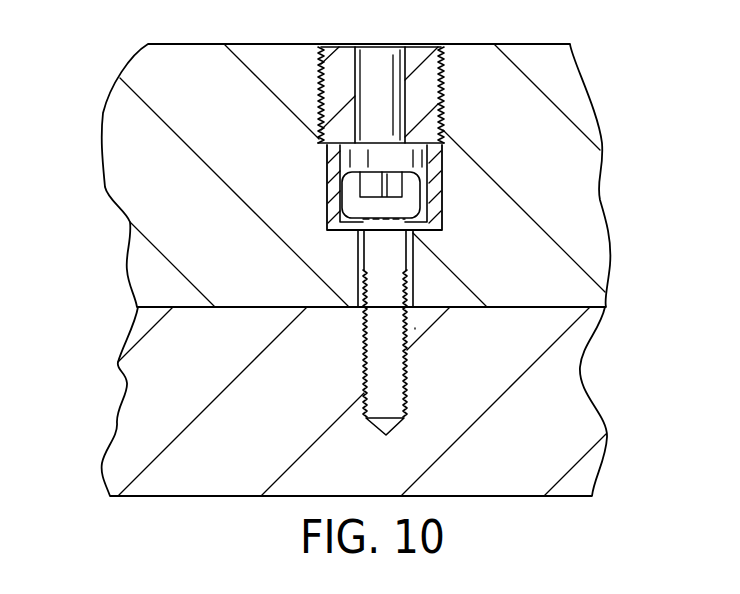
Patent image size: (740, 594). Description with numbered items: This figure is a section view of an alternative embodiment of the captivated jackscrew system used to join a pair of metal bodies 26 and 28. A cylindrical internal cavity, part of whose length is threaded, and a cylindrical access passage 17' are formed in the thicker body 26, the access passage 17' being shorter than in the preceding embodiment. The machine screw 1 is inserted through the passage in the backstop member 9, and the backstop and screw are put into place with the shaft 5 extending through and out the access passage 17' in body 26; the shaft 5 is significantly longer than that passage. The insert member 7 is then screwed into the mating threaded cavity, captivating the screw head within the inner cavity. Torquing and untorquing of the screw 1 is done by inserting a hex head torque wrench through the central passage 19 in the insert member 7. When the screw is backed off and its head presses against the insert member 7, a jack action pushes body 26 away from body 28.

The machine screw 1 is at (437, 329).
The shaft 5 is at (366, 374).
The insert member 7 is at (444, 90).
The backstop member 9 is at (443, 183).
The access passage 17' is at (436, 268).
The central passage 19 is at (397, 52).
The body 26 is at (105, 187).
The body 28 is at (116, 423).